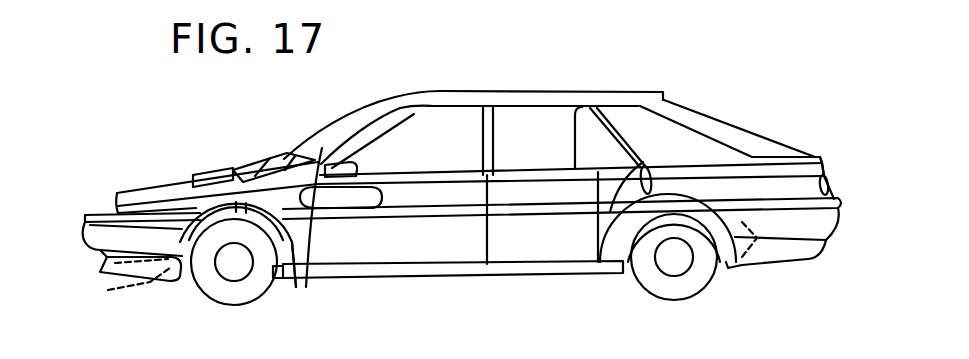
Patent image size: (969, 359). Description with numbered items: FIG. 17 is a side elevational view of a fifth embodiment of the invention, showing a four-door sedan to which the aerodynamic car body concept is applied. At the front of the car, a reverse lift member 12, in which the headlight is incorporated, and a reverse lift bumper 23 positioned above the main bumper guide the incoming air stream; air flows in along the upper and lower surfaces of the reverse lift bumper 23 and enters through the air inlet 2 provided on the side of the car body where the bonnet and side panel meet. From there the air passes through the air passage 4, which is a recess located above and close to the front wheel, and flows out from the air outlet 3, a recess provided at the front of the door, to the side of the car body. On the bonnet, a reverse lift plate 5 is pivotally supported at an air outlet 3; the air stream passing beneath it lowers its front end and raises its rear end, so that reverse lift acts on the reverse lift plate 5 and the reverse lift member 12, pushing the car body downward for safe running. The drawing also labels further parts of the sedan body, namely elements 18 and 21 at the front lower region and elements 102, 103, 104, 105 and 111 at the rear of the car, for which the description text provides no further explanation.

The air inlet 2 is at (84, 226).
The air outlet 3 is at (243, 165).
The air passage 4 is at (298, 270).
The reverse lift plate 5 is at (212, 172).
The reverse lift member 12 is at (133, 190).
The front air dam 18 is at (157, 281).
The front spoiler lip 21 is at (92, 248).
The reverse lift bumper 23 is at (87, 217).
The rear bumper lower skirt 102 is at (720, 269).
The rear bumper 103 is at (818, 244).
The rear wheel arch 104 is at (598, 252).
The rear deck lid 105 is at (814, 157).
The rear panel 111 is at (818, 171).